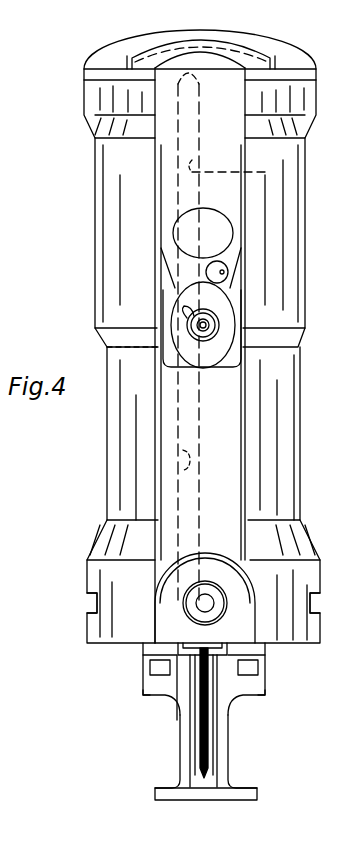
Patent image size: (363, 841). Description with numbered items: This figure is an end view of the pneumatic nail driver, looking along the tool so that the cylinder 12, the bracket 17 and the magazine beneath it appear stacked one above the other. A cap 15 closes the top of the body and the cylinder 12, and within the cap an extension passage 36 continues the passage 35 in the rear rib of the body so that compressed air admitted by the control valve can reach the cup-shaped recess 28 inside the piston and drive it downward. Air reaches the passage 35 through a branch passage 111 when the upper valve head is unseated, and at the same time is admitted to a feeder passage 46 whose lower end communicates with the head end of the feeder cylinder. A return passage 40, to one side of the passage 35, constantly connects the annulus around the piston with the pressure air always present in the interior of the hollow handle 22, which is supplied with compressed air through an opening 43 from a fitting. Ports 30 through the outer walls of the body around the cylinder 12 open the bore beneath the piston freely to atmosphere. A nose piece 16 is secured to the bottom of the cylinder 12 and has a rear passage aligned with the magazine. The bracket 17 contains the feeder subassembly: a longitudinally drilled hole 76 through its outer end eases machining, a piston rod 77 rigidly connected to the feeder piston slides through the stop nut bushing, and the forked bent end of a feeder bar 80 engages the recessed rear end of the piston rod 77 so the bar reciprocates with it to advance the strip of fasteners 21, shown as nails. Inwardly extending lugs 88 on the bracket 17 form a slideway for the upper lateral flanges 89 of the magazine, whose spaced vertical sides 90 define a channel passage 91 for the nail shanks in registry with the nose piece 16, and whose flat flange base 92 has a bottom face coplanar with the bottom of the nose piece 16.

The cap 15 is at (135, 45).
The extension passage 36 is at (256, 50).
The cup-shaped recess 28 is at (220, 133).
The passage 35 is at (265, 172).
The cylinder 12 is at (123, 302).
The branch passage 111 is at (187, 325).
The hollow handle 22 is at (192, 281).
The return passage 40 is at (228, 275).
The opening 43 is at (219, 325).
The feeder passage 46 is at (183, 450).
The bracket 17 is at (212, 562).
The ports 30 is at (87, 603).
The piston rod 77 is at (225, 612).
The longitudinally drilled hole 76 is at (214, 606).
The feeder bar 80 is at (230, 652).
The lugs 88 is at (162, 663).
The upper lateral flanges 89 is at (165, 650).
The nose piece 16 is at (148, 693).
The channel passage 91 is at (197, 726).
The vertical sides 90 is at (203, 748).
The fasteners 21 is at (212, 737).
The flat flange base 92 is at (248, 790).